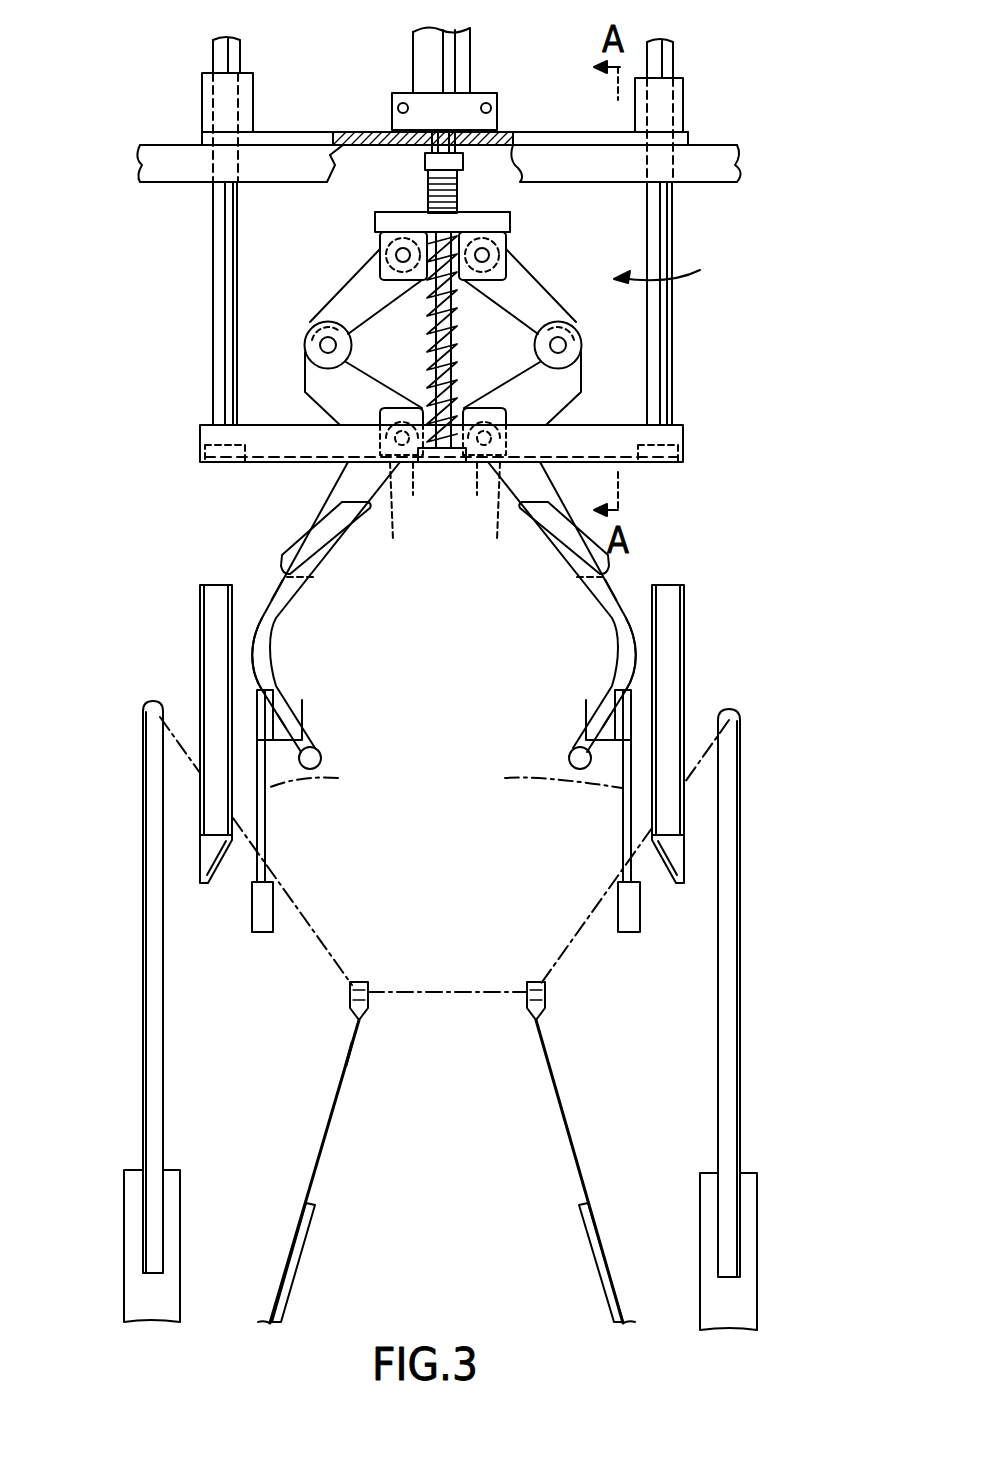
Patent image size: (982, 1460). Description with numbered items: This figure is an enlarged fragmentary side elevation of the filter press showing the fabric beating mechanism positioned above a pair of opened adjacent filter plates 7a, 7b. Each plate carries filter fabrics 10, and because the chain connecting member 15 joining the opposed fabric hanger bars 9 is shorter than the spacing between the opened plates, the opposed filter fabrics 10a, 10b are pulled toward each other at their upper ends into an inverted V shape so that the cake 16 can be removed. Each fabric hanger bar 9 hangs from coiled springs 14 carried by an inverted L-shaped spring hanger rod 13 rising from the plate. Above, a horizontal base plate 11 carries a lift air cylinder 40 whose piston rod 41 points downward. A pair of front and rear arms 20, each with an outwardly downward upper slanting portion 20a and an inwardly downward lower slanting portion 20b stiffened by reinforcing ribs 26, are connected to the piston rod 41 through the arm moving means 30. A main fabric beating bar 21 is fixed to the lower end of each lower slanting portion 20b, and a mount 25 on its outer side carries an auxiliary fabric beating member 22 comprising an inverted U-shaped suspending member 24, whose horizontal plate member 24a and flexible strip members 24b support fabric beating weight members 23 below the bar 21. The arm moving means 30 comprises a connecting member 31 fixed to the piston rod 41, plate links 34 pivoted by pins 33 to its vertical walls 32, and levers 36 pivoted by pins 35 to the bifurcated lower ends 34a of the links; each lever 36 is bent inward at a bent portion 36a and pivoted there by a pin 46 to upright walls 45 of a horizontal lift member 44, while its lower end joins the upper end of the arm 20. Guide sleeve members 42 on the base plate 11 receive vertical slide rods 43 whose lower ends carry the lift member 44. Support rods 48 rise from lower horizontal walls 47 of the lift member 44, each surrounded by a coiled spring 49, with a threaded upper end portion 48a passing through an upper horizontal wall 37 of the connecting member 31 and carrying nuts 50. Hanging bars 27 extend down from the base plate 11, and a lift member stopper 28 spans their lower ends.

The filter plate 7a is at (702, 1190).
The filter plate 7b is at (182, 1210).
The fabric hanger bar 9 is at (349, 998).
The filter fabric 10 is at (349, 1046).
The filter fabric 10a is at (564, 1126).
The filter fabric 10b is at (330, 1126).
The horizontal base plate 11 is at (348, 142).
The spring hanger rod 13 is at (165, 1050).
The coiled spring 14 is at (303, 907).
The connecting member 15 is at (455, 994).
The cake 16 is at (298, 1262).
The arm 20 is at (300, 603).
The upper slanting portion 20a is at (303, 588).
The lower slanting portion 20b is at (290, 705).
The main fabric beating bar 21 is at (318, 748).
The auxiliary fabric beating member 22 is at (376, 793).
The fabric beating weight member 23 is at (255, 922).
The suspending member 24 is at (268, 818).
The horizontal plate member 24a is at (258, 700).
The flexible strip member 24b is at (268, 850).
The mount 25 is at (285, 735).
The reinforcing rib 26 is at (250, 636).
The hanging bar 27 is at (205, 603).
The lift member stopper 28 is at (200, 852).
The arm moving means 30 is at (669, 262).
The connecting member 31 is at (378, 222).
The vertical wall 32 is at (365, 272).
The pin 33 is at (398, 252).
The plate link 34 is at (540, 290).
The bifurcated lower end 34a is at (318, 322).
The pin 35 is at (318, 352).
The lever 36 is at (566, 388).
The bent portion 36a is at (482, 466).
The upper horizontal wall 37 is at (498, 222).
The lift air cylinder 40 is at (458, 62).
The piston rod 41 is at (482, 145).
The guide sleeve member 42 is at (215, 92).
The vertical slide rod 43 is at (216, 252).
The horizontal lift member 44 is at (684, 440).
The upright wall 45 is at (373, 464).
The pin 46 is at (478, 464).
The lower horizontal wall 47 is at (444, 464).
The support rod 48 is at (455, 338).
The threaded upper end portion 48a is at (426, 165).
The coiled spring 49 is at (432, 322).
The nut 50 is at (458, 195).